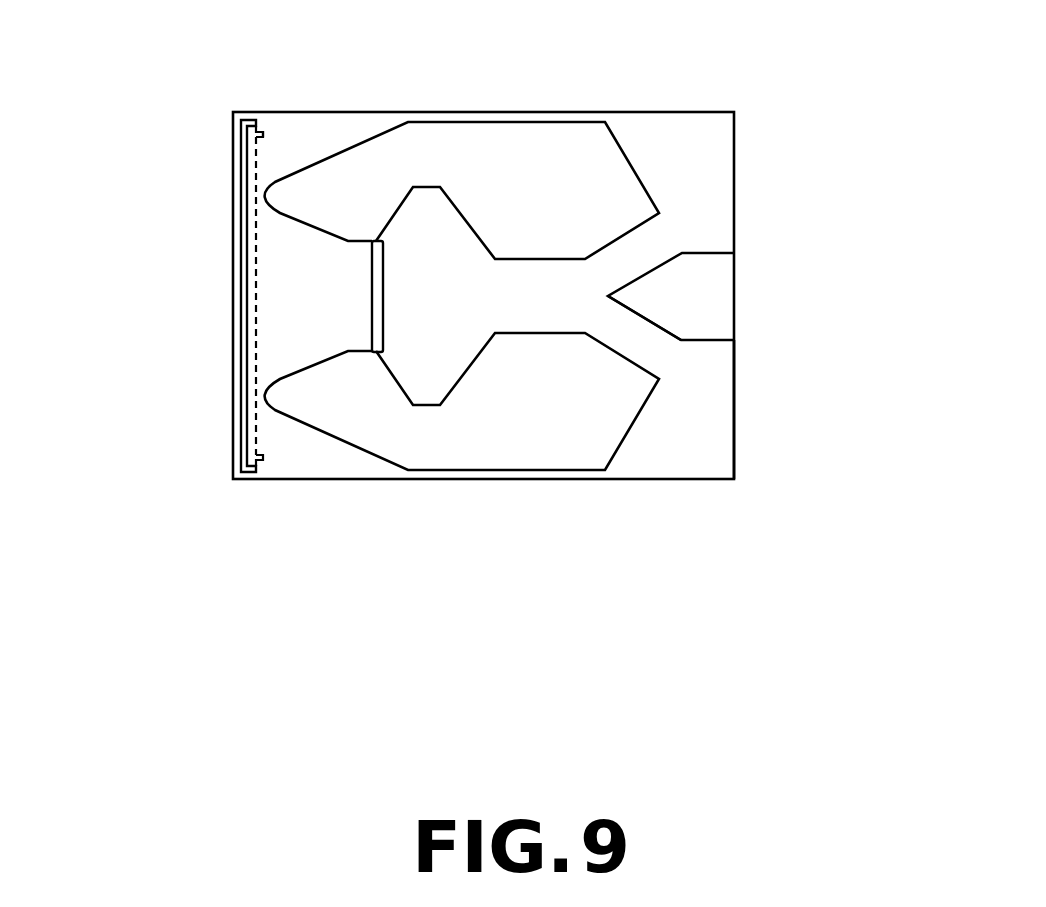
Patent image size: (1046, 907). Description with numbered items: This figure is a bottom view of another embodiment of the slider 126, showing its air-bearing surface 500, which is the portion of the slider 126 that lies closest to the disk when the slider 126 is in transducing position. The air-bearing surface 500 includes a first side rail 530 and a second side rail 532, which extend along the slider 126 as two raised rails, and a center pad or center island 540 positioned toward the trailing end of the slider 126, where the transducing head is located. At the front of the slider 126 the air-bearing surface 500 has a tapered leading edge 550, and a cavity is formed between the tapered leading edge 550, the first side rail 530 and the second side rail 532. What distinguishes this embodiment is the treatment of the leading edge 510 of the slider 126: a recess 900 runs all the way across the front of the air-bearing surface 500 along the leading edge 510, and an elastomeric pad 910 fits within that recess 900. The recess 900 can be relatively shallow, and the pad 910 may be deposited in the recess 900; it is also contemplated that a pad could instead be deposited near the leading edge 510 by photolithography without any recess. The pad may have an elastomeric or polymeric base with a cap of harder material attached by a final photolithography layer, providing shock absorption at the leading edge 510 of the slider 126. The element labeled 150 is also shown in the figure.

The air-bearing surface 500 is at (713, 223).
The leading edge 510 is at (233, 262).
The elastomeric pad 910 is at (240, 358).
The recess 900 is at (256, 160).
The first side rail 530 is at (447, 142).
The second side rail 532 is at (503, 443).
The tapered leading edge 550 is at (305, 349).
The wedge cutout 150 is at (736, 279).
The center pad or center island 540 is at (702, 313).
The slider 126 is at (735, 377).